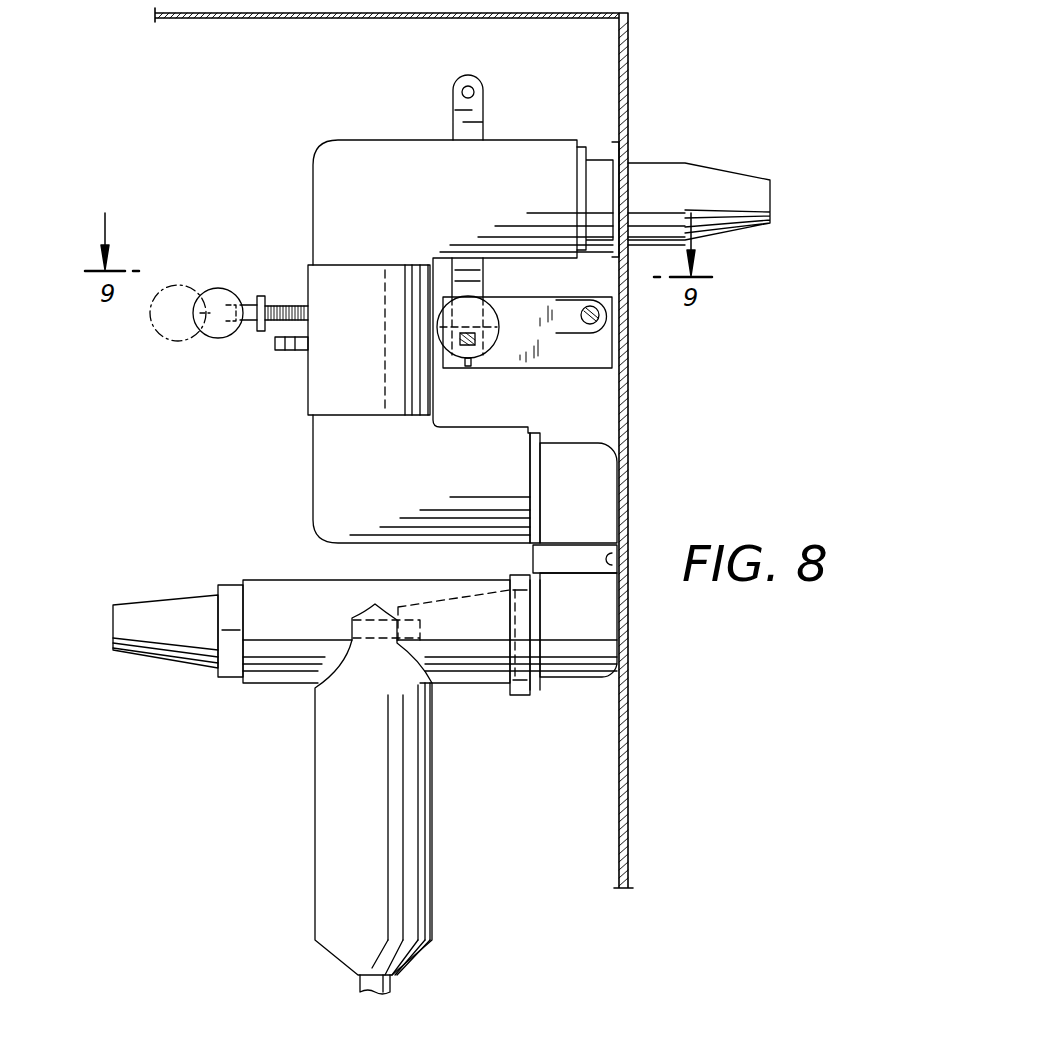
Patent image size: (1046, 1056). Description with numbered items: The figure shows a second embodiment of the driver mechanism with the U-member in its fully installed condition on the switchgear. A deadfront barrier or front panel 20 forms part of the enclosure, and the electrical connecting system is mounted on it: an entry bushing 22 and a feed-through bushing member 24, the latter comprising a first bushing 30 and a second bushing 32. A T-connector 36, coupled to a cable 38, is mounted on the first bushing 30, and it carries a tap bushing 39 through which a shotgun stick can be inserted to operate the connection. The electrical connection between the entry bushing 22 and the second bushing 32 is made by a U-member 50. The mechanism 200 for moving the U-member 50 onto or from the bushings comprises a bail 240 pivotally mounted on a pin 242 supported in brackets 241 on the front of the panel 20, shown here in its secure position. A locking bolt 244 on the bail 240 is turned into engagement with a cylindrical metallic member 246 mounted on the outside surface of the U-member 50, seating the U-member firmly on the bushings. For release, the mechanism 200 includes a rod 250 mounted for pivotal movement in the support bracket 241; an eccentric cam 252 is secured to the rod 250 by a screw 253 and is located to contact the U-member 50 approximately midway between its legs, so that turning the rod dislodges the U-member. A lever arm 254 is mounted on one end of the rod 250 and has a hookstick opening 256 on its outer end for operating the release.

The front panel 20 is at (627, 822).
The entry bushing 22 is at (600, 162).
The feed-through bushing member 24 is at (568, 680).
The first bushing 30 is at (452, 665).
The second bushing 32 is at (597, 441).
The T-connector 36 is at (318, 851).
The cable 38 is at (392, 985).
The tap bushing 39 is at (155, 660).
The U-member 50 is at (312, 467).
The mechanism 200 is at (484, 294).
The bail 240 is at (595, 337).
The brackets 241 is at (272, 343).
The pin 242 is at (598, 315).
The locking bolt 244 is at (283, 305).
The cylindrical metallic member 246 is at (307, 388).
The rod 250 is at (480, 340).
The eccentric cam 252 is at (464, 265).
The screw 253 is at (466, 355).
The lever arm 254 is at (455, 100).
The hookstick opening 256 is at (474, 88).